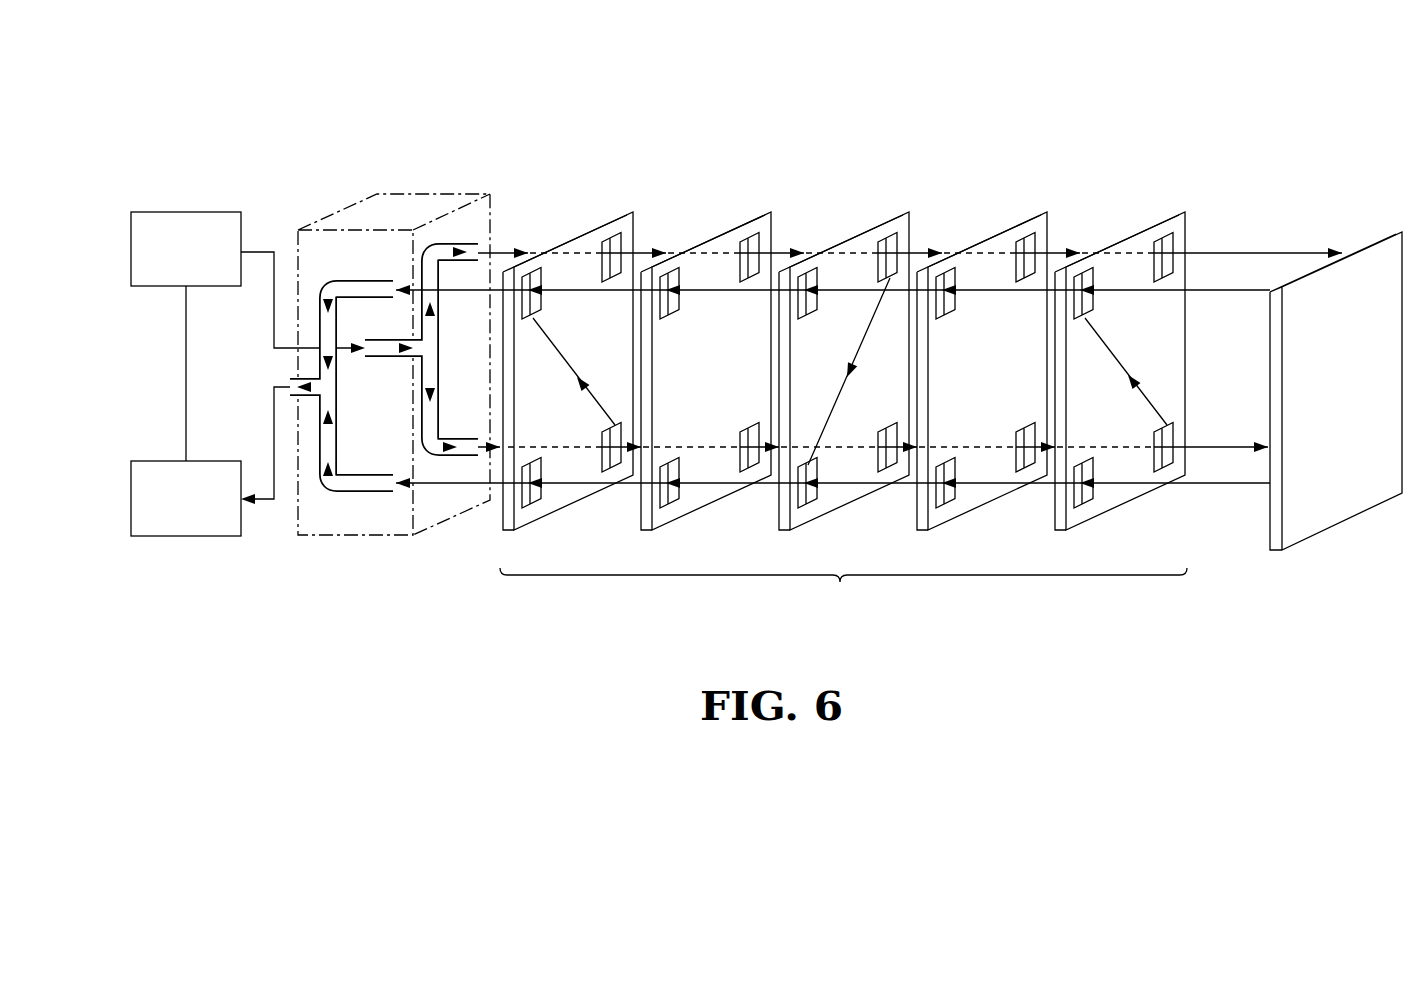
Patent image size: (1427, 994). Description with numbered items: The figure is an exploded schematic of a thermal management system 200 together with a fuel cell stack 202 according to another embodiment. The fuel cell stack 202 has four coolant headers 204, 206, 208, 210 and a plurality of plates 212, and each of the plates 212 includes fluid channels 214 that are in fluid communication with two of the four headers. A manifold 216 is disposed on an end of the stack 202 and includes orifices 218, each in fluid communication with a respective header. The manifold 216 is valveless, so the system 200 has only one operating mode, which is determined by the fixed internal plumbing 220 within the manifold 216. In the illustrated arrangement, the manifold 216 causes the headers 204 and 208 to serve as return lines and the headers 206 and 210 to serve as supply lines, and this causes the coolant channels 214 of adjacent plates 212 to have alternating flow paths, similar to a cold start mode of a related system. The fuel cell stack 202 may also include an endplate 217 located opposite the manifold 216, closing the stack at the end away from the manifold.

The thermal management system 200 is at (330, 86).
The fuel cell stack 202 is at (843, 593).
The coolant header 204 is at (453, 292).
The coolant header 206 is at (776, 251).
The coolant header 208 is at (1040, 487).
The coolant header 210 is at (1235, 445).
The plate 212 is at (631, 212).
The fluid channel 214 is at (562, 347).
The manifold 216 is at (437, 194).
The endplate 217 is at (1385, 232).
The orifice 218 is at (488, 249).
The fixed internal plumbing 220 is at (363, 495).